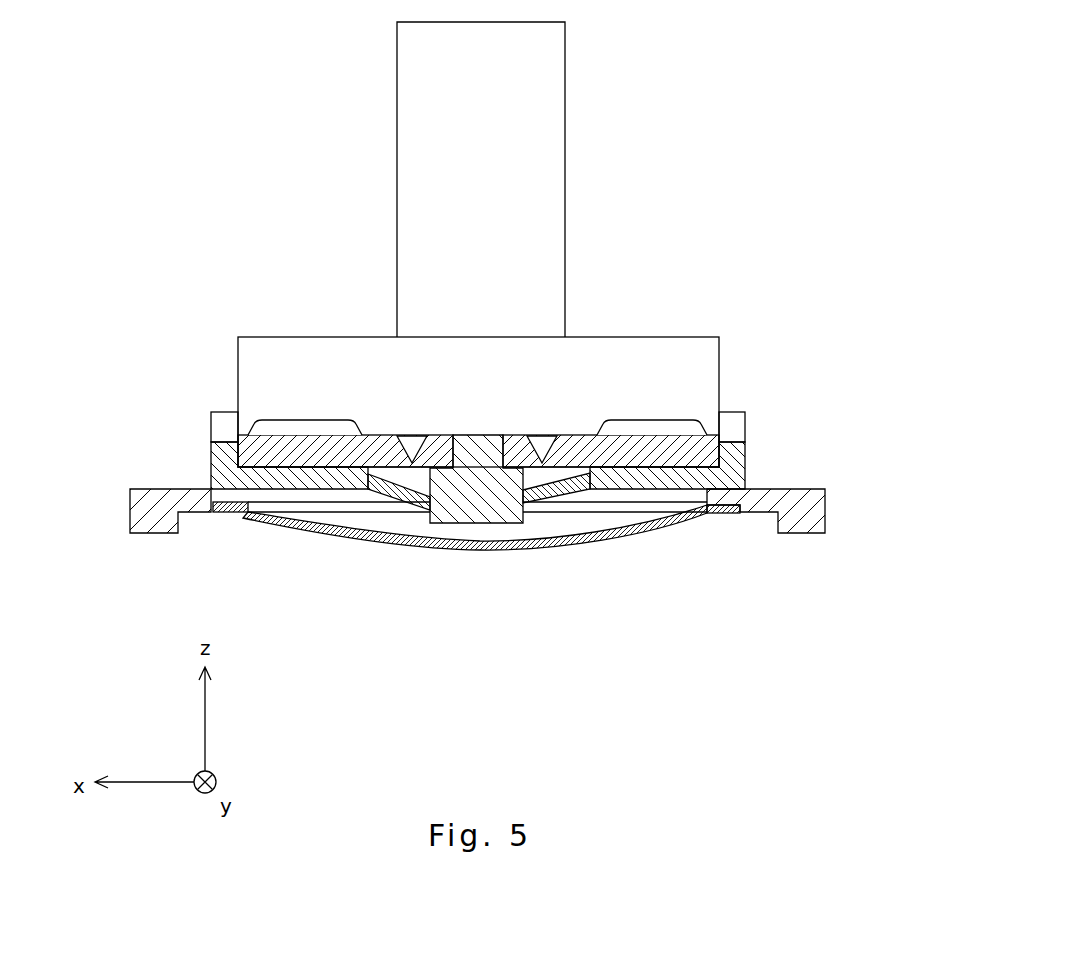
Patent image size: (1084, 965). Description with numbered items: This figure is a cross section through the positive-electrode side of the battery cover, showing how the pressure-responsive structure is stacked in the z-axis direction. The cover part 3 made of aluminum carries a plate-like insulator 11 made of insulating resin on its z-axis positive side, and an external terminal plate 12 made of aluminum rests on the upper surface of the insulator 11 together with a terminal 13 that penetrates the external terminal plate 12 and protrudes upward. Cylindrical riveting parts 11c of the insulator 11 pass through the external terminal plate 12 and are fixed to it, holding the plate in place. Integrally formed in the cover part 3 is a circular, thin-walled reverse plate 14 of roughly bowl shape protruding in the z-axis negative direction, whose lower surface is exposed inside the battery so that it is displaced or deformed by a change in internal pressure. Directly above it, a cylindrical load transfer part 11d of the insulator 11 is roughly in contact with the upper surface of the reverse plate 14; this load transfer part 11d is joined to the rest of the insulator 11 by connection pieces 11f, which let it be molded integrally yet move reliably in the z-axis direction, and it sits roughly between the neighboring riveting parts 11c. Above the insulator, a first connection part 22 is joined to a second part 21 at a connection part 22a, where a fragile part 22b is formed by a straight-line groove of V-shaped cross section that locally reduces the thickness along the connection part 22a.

The cover part 3 is at (825, 513).
The insulator 11 is at (418, 516).
The riveting parts 11c is at (300, 428).
The load transfer part 11d is at (450, 510).
The connection pieces 11f is at (388, 492).
The external terminal plate 12 is at (723, 328).
The terminal 13 is at (552, 116).
The reverse plate 14 is at (485, 550).
The second part 21 is at (719, 441).
The first connection part 22 is at (594, 436).
The connection part 22a is at (600, 546).
The fragile part 22b is at (565, 494).